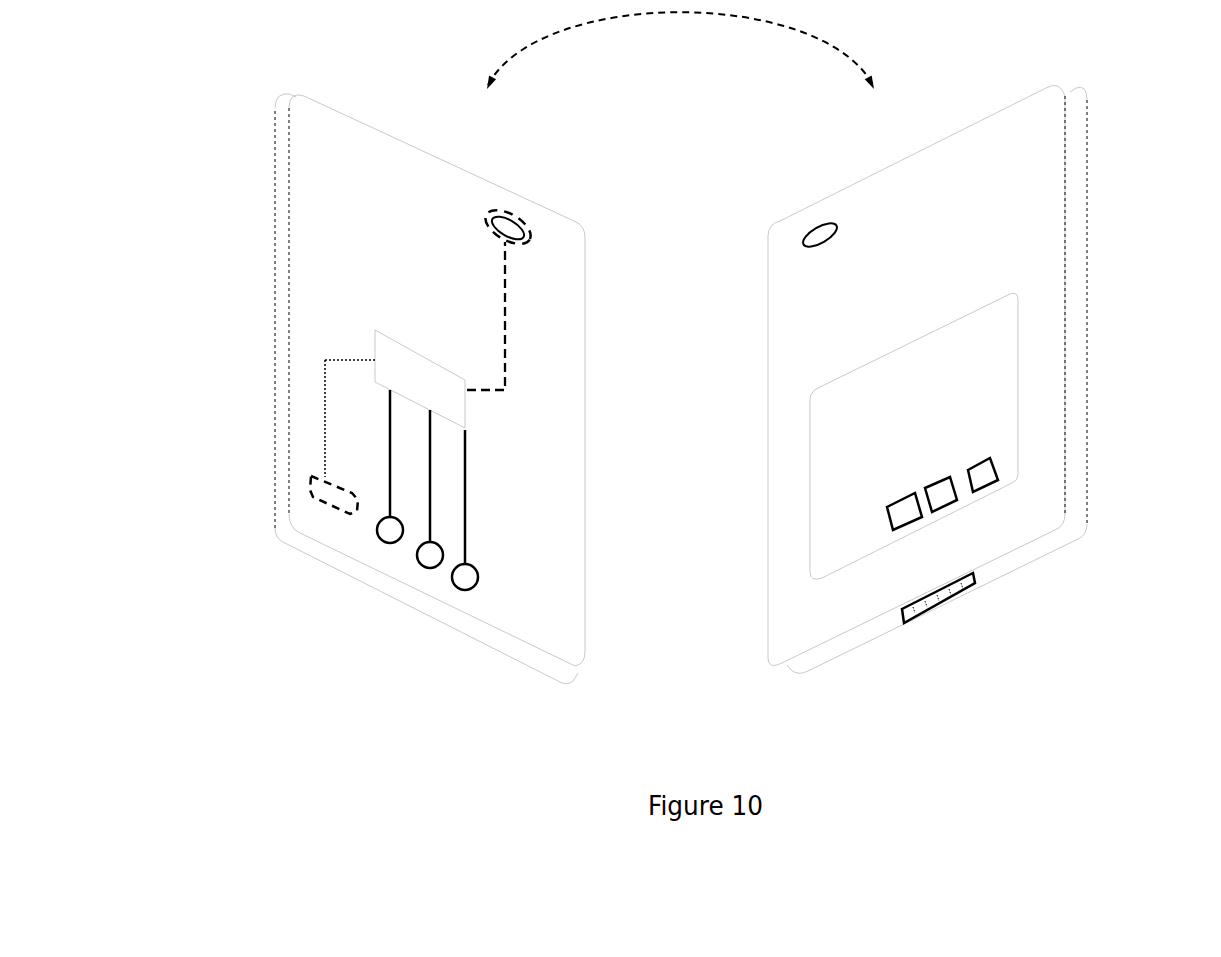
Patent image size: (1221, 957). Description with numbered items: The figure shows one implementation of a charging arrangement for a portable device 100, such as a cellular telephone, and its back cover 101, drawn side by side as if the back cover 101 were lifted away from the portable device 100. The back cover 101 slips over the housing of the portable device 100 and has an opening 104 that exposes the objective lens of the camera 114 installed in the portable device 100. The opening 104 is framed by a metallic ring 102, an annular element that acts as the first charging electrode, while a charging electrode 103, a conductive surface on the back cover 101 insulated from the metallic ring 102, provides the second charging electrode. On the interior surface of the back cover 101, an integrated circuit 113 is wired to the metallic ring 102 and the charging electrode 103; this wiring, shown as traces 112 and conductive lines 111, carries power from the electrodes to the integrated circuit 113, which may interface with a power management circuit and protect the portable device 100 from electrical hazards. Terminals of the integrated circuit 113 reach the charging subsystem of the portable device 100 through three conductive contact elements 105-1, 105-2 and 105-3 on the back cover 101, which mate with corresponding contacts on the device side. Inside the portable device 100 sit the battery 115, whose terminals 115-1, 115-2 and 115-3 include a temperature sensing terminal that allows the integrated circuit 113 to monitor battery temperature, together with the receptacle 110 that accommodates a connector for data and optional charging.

The portable device 100 is at (1070, 323).
The back cover 101 is at (288, 155).
The metallic ring 102 is at (488, 210).
The charging electrode 103 is at (313, 477).
The opening 104 is at (514, 217).
The conductive contact element 105-1 is at (378, 538).
The conductive contact element 105-2 is at (457, 590).
The conductive contact element 105-3 is at (418, 566).
The receptacle 110 is at (920, 623).
The conductive lines 111 is at (400, 502).
The antenna trace 112 is at (503, 337).
The integrated circuit 113 is at (470, 433).
The camera 114 is at (818, 227).
The battery 115 is at (1017, 473).
The first battery terminal 115-1 is at (997, 485).
The second battery terminal 115-2 is at (922, 522).
The third battery terminal 115-3 is at (950, 505).